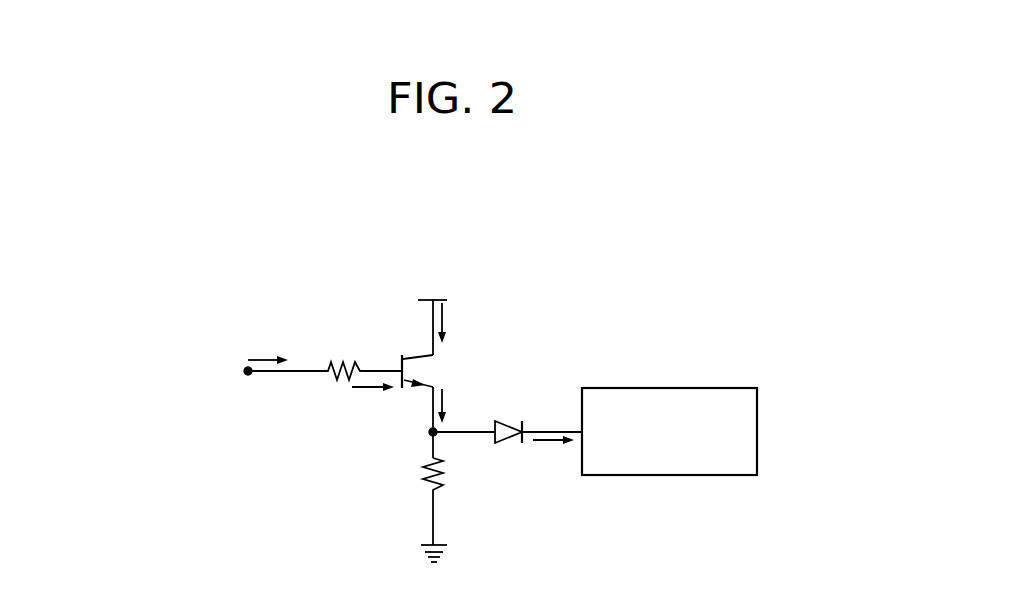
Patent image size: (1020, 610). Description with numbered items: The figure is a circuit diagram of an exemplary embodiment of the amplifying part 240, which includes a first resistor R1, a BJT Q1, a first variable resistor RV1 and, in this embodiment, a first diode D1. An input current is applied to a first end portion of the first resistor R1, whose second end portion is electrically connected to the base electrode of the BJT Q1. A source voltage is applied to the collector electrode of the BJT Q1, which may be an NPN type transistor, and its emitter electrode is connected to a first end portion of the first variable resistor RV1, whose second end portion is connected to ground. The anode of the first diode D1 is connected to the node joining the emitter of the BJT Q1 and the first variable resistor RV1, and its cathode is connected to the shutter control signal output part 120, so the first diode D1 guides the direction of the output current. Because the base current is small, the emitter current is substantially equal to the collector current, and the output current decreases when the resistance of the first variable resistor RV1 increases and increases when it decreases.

The amplifying part 240 is at (421, 250).
The shutter control signal output part 120 is at (688, 388).
The first resistor R1 is at (363, 356).
The BJT Q1 is at (434, 366).
The first variable resistor RV1 is at (455, 488).
The first diode D1 is at (507, 419).